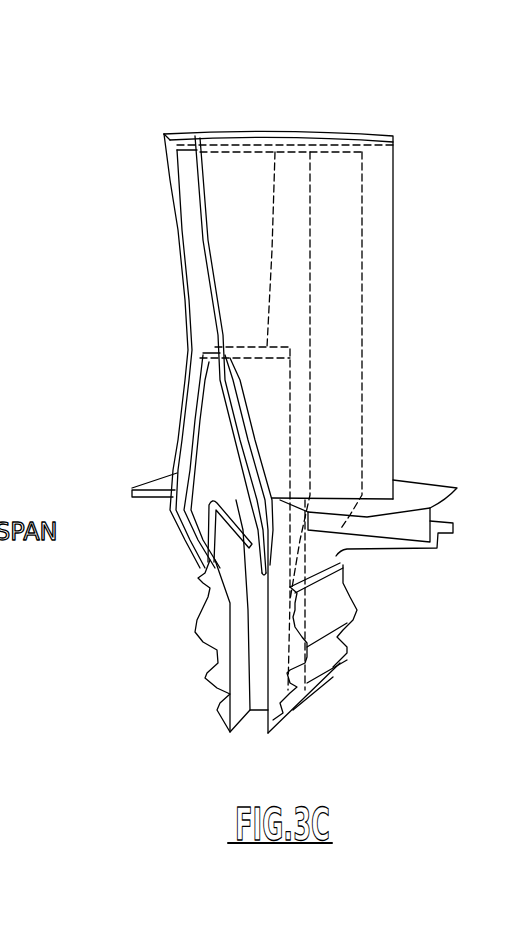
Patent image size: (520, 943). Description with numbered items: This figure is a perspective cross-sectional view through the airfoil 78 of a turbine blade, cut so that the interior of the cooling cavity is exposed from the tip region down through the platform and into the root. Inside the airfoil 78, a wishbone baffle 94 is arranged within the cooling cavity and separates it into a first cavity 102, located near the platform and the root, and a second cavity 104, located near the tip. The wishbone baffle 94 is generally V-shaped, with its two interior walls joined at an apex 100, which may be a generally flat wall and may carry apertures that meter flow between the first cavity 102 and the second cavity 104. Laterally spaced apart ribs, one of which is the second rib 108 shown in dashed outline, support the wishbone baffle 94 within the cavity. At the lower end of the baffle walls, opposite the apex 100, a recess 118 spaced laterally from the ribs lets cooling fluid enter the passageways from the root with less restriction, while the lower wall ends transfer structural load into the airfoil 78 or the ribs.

The airfoil 78 is at (400, 182).
The second rib 108 is at (310, 282).
The second cavity 104 is at (203, 292).
The apex 100 is at (216, 354).
The wishbone baffle 94 is at (212, 428).
The recess 118 is at (240, 506).
The first cavity 102 is at (236, 572).